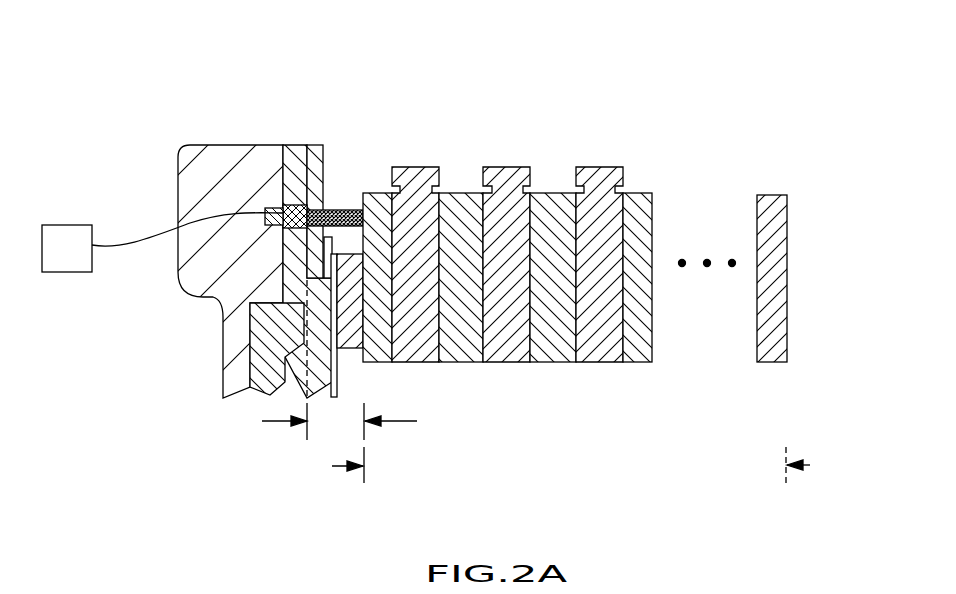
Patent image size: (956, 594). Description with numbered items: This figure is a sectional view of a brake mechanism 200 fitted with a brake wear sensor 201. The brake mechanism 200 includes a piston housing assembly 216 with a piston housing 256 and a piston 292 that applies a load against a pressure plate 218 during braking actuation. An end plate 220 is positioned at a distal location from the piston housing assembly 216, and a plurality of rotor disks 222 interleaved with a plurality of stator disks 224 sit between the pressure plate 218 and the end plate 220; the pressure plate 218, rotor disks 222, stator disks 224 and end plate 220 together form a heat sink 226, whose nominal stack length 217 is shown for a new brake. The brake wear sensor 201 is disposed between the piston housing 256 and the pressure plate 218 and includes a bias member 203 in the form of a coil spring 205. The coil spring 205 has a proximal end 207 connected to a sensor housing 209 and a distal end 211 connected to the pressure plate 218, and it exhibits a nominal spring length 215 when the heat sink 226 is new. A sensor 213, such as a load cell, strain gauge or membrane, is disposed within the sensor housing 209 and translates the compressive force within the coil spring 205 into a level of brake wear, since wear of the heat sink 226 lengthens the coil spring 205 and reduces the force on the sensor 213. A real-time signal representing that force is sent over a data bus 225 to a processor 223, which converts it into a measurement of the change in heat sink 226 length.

The brake mechanism 200 is at (115, 100).
The brake wear sensor 201 is at (338, 160).
The bias member 203 is at (338, 208).
The coil spring 205 is at (355, 205).
The proximal end 207 is at (312, 185).
The sensor housing 209 is at (297, 188).
The distal end 211 is at (365, 207).
The sensor 213 is at (287, 230).
The nominal spring length 215 is at (263, 421).
The piston housing assembly 216 is at (200, 219).
The nominal stack length 217 is at (810, 464).
The pressure plate 218 is at (382, 207).
The end plate 220 is at (776, 220).
The rotor disks 222 is at (429, 274).
The processor 223 is at (55, 252).
The stator disks 224 is at (465, 357).
The data bus 225 is at (105, 250).
The heat sink 226 is at (516, 140).
The piston housing 256 is at (200, 195).
The piston 292 is at (342, 350).